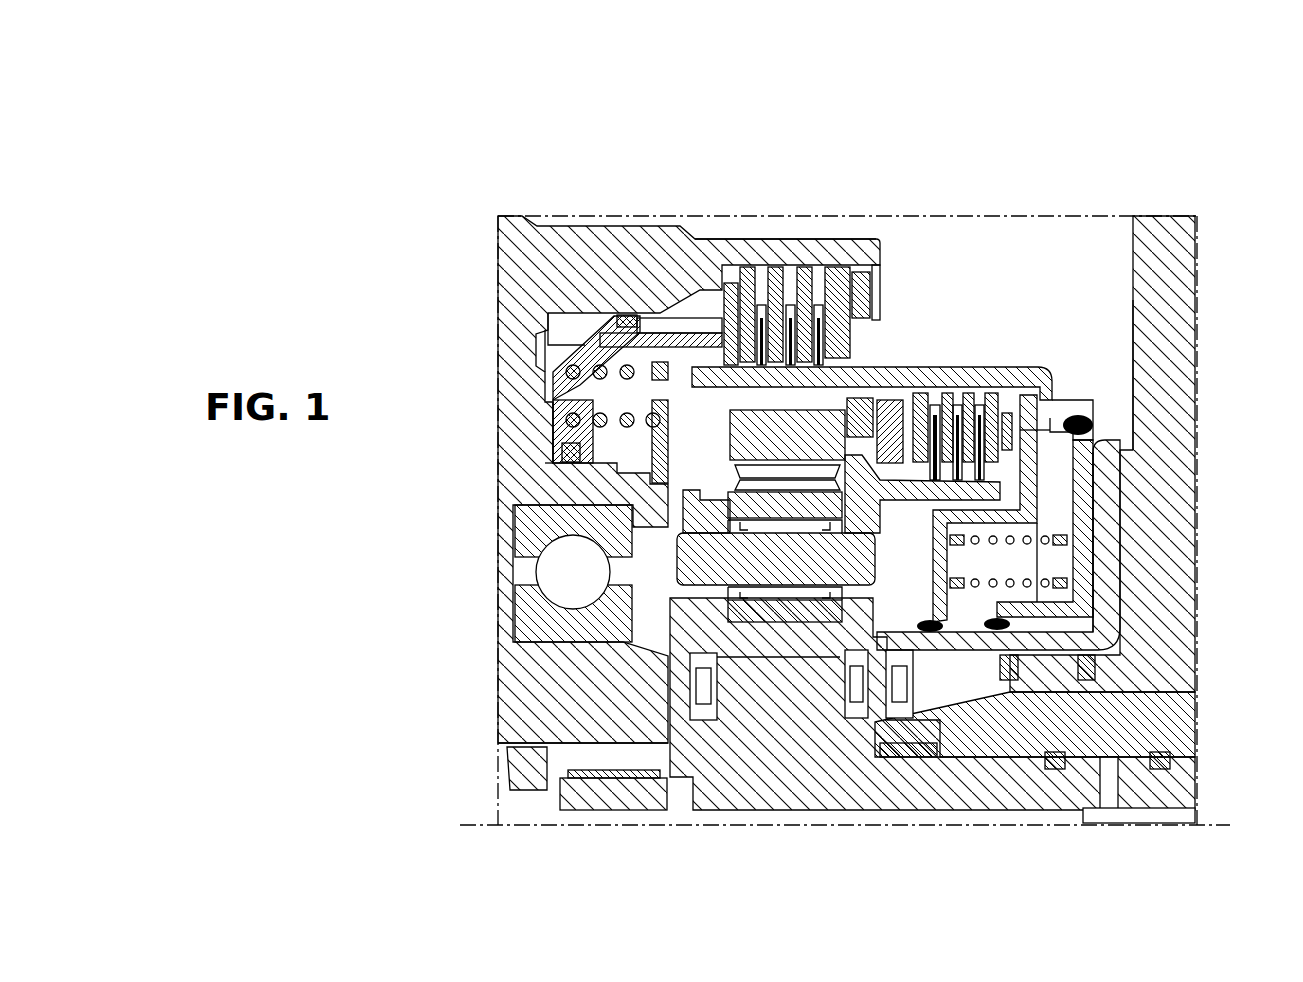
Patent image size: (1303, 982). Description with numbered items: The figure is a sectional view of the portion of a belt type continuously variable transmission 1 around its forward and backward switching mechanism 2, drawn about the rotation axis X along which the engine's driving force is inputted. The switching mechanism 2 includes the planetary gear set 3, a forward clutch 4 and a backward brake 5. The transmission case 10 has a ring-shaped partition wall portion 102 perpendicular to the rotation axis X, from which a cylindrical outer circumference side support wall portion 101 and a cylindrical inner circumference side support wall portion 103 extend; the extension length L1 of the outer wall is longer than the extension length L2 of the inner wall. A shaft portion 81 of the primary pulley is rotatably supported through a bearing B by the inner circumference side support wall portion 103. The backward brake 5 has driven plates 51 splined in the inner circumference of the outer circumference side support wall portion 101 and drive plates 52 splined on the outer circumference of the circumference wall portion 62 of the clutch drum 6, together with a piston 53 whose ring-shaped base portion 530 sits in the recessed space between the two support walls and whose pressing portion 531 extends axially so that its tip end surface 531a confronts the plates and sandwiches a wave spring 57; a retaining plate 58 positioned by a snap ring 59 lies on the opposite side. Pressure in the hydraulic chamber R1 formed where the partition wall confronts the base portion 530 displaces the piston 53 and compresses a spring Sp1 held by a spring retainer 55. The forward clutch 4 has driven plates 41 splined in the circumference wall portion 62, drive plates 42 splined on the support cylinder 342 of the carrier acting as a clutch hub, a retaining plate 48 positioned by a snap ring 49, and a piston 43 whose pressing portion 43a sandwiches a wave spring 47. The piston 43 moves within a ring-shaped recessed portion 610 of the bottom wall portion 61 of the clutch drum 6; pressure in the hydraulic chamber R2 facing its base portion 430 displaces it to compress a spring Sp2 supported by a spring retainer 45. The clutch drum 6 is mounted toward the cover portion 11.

The belt type continuously variable transmission 1 is at (352, 186).
The forward and backward switching mechanism 2 is at (985, 208).
The planetary gear set 3 is at (722, 466).
The forward clutch 4 is at (1014, 352).
The backward brake 5 is at (701, 280).
The clutch drum 6 is at (1081, 470).
The transmission case 10 is at (510, 212).
The cover portion 11 is at (1172, 228).
The driven plates 41 is at (998, 392).
The drive plates 42 is at (977, 392).
The piston 43 is at (1062, 390).
The pressing portion 43a is at (1030, 427).
The spring retainer 45 is at (928, 620).
The wave spring 47 is at (1003, 411).
The retaining plate 48 is at (890, 398).
The snap ring 49 is at (858, 397).
The driven plates 51 is at (745, 264).
The drive plates 52 is at (803, 254).
The piston 53 is at (612, 310).
The spring retainer 55 is at (650, 444).
The wave spring 57 is at (727, 281).
The retaining plate 58 is at (860, 270).
The snap ring 59 is at (877, 265).
The bottom wall portion 61 is at (1130, 446).
The circumference wall portion 62 is at (1133, 365).
The shaft portion 81 is at (515, 692).
The outer circumference side support wall portion 101 is at (805, 245).
The partition wall portion 102 is at (545, 348).
The inner circumference side support wall portion 103 is at (568, 482).
The support cylinder 342 is at (907, 500).
The base portion 430 is at (1085, 552).
The base portion 530 is at (568, 405).
The pressing portion 531 is at (640, 376).
The tip end surface 531a is at (668, 312).
The ring-shaped recessed portion 610 is at (1097, 475).
The bearing B is at (528, 548).
The extension length L1 is at (878, 239).
The extension length L2 is at (677, 573).
The hydraulic chamber R1 is at (566, 329).
The hydraulic chamber R2 is at (1092, 612).
The spring Sp1 is at (598, 363).
The spring Sp2 is at (977, 543).
The rotation axis X is at (1200, 786).